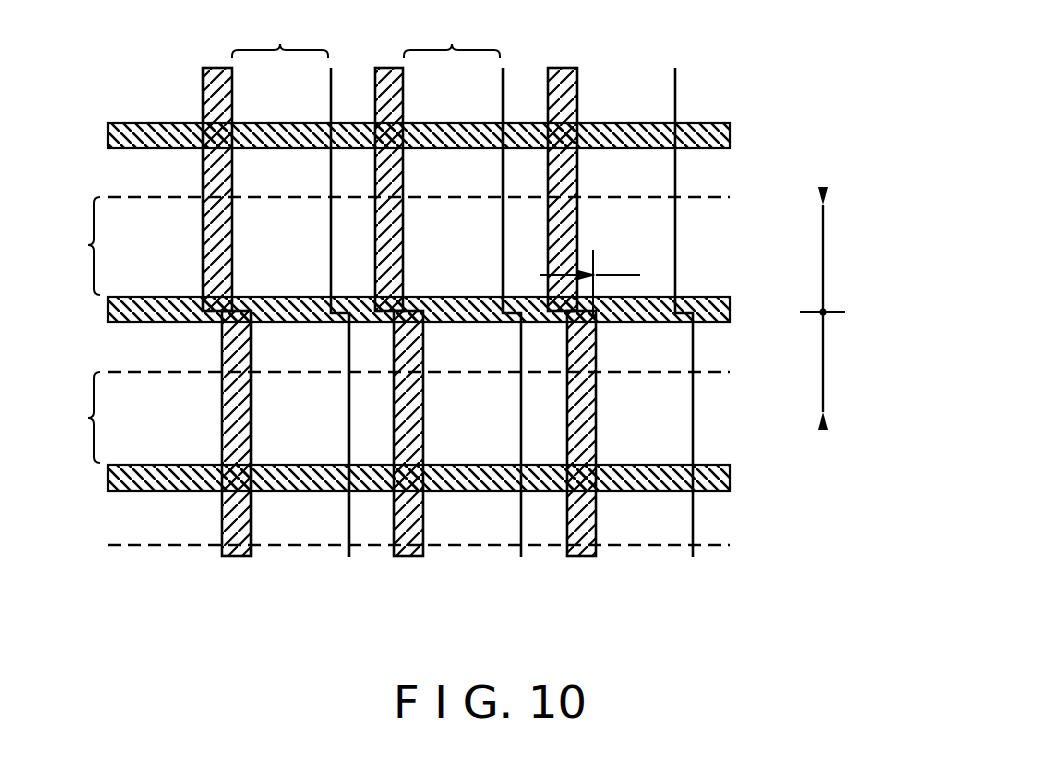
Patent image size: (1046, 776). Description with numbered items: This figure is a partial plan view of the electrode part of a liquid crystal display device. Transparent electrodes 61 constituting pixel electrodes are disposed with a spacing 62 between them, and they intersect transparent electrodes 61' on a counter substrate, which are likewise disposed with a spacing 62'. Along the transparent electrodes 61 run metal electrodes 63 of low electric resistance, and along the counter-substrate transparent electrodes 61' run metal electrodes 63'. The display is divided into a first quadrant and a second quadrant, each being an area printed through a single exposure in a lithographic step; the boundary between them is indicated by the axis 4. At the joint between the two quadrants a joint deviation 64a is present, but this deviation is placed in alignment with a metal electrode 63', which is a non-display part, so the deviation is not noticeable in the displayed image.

The transparent electrodes 61 is at (366, 35).
The spacing 62 is at (507, 278).
The metal electrodes 63 is at (389, 278).
The transparent electrodes 61' is at (71, 330).
The spacing 62' is at (386, 351).
The metal electrode 63' is at (386, 301).
The joint deviation 64a is at (594, 280).
The quadrant boundary axis 4 is at (740, 312).